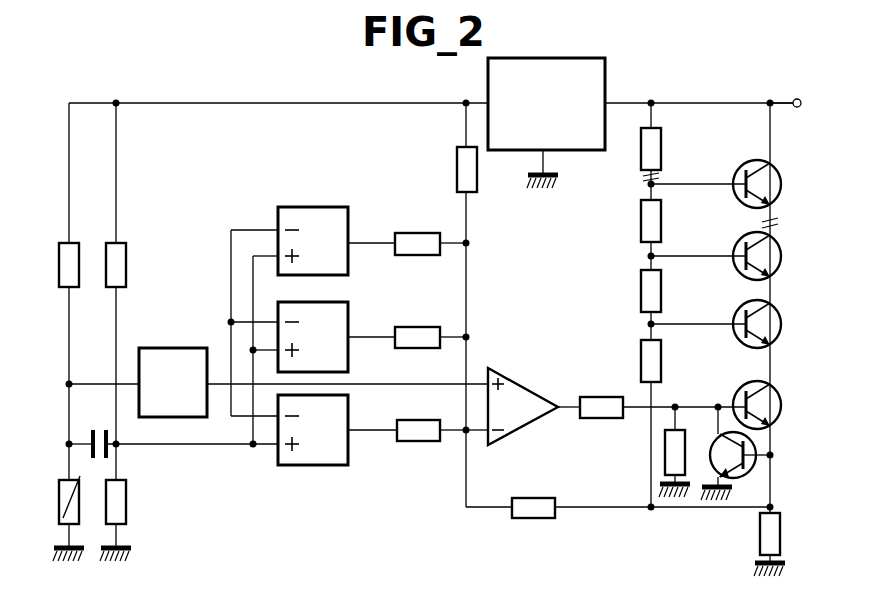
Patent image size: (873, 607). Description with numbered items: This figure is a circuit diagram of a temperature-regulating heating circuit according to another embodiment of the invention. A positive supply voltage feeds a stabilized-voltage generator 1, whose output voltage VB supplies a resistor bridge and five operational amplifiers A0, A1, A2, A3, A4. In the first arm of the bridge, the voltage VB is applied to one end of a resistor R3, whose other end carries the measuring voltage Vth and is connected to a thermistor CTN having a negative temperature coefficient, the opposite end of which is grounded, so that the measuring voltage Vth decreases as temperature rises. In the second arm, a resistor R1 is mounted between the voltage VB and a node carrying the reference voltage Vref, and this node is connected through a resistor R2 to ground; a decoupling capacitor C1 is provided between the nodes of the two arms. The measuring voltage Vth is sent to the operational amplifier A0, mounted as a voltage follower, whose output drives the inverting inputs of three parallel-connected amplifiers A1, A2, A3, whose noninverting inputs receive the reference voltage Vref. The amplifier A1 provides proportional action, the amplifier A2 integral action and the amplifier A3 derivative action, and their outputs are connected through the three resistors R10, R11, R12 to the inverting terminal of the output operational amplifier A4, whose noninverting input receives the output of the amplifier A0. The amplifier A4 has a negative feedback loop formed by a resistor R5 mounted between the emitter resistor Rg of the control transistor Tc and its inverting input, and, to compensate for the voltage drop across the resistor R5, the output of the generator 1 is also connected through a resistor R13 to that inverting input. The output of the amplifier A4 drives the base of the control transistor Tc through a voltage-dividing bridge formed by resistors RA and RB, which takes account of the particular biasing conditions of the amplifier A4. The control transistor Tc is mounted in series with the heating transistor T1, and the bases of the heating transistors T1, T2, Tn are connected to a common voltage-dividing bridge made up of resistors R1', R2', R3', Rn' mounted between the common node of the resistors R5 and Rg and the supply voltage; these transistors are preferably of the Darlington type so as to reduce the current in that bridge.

The stabilized-voltage generator 1 is at (605, 66).
The output voltage of the stabilized-voltage generator VB is at (429, 93).
The measuring voltage Vth is at (83, 362).
The reference voltage Vref is at (133, 431).
The resistor R3 is at (78, 250).
The resistor R1 is at (129, 255).
The resistor R2 is at (129, 520).
The thermistor CTN is at (59, 504).
The decoupling capacitor C1 is at (114, 454).
The operational amplifier A0 is at (195, 417).
The operational amplifier A1 is at (364, 198).
The operational amplifier A2 is at (362, 298).
The operational amplifier A3 is at (342, 460).
The output operational amplifier A4 is at (523, 385).
The resistor R13 is at (456, 162).
The resistor R12 is at (418, 234).
The resistor R11 is at (418, 328).
The resistor R10 is at (417, 402).
The resistor RA is at (604, 397).
The negative feedback resistor R5 is at (539, 498).
The resistor RB is at (665, 454).
The voltage-dividing bridge resistor Rn' is at (673, 149).
The voltage-dividing bridge resistor R3' is at (671, 220).
The voltage-dividing bridge resistor R2' is at (632, 290).
The voltage-dividing bridge resistor R1' is at (672, 360).
The heating transistor Tn is at (777, 192).
The heating transistor T2 is at (777, 260).
The heating transistor T1 is at (781, 327).
The control transistor Tc is at (770, 455).
The emitter resistor Rg is at (760, 535).